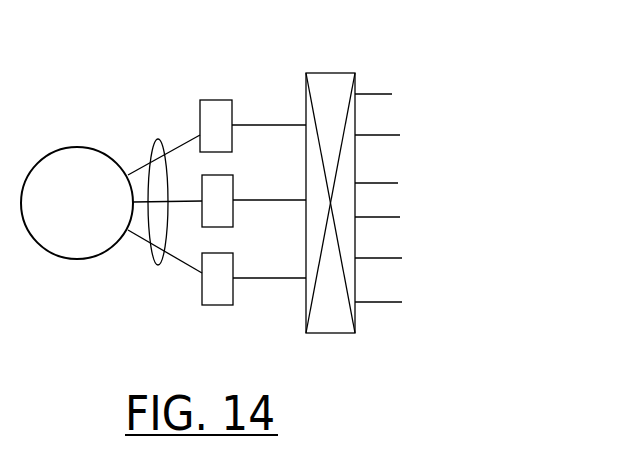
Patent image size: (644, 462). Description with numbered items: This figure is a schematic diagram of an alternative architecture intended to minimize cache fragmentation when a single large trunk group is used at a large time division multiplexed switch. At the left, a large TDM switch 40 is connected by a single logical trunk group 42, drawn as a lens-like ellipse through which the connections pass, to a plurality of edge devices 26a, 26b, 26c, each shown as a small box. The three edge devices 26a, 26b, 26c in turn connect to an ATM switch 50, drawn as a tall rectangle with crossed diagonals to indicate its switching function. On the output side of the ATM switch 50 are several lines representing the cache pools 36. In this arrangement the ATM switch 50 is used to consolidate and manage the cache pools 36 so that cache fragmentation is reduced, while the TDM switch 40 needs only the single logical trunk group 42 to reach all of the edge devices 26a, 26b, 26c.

The TDM switch 40 is at (73, 158).
The logical trunk group 42 is at (148, 252).
The edge device 26a is at (218, 100).
The edge device 26b is at (222, 175).
The edge device 26c is at (215, 305).
The ATM switch 50 is at (325, 75).
The cache pools 36 is at (380, 133).